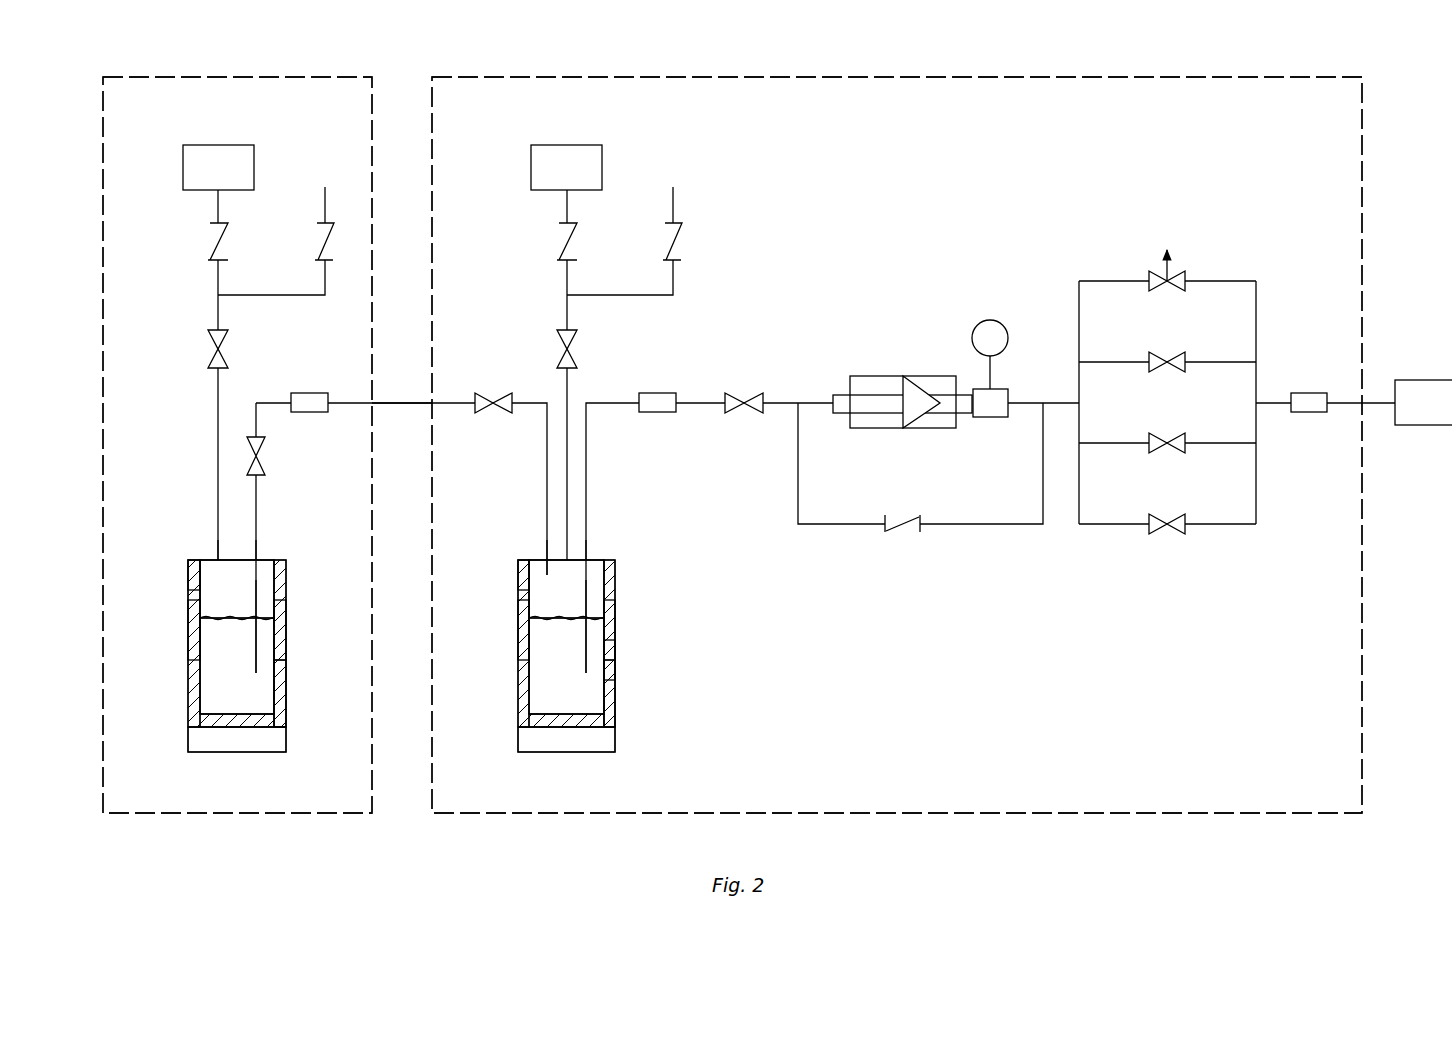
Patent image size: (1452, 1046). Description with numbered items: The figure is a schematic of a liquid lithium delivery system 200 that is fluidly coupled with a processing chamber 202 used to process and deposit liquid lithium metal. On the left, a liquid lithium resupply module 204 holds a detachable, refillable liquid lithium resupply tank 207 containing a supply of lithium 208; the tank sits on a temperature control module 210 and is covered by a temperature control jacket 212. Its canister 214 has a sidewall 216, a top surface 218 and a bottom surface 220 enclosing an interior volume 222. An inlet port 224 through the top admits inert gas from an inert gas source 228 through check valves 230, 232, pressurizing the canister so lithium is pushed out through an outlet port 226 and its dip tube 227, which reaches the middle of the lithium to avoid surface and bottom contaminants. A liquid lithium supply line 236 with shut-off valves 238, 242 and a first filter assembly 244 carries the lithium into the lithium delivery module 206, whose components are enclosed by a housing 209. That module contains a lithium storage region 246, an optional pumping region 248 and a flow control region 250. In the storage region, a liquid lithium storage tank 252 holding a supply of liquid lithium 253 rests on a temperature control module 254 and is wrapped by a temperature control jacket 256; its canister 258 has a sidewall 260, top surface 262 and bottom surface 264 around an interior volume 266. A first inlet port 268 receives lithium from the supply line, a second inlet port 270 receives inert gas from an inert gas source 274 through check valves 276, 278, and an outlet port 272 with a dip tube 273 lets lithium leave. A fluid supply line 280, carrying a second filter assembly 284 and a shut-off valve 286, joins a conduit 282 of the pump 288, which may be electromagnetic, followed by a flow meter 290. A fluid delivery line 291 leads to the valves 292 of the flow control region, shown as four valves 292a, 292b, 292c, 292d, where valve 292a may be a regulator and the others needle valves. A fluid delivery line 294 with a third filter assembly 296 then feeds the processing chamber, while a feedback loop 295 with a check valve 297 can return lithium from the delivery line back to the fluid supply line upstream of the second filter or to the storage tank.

The liquid lithium delivery system 200 is at (196, 45).
The processing chamber 202 is at (1450, 414).
The liquid lithium resupply module 204 is at (200, 833).
The lithium delivery module 206 is at (515, 835).
The liquid lithium resupply tank 207 is at (193, 568).
The supply of lithium 208 is at (215, 690).
The housing 209 is at (1268, 77).
The temperature control module 210 is at (207, 768).
The temperature control jacket 212 is at (287, 686).
The canister 214 is at (195, 632).
The sidewall 216 is at (282, 632).
The top surface 218 is at (270, 562).
The bottom surface 220 is at (258, 727).
The interior volume 222 is at (215, 600).
The inlet port 224 is at (216, 557).
The outlet port 226 is at (261, 557).
The dip tube 227 is at (258, 604).
The inert gas source 228 is at (236, 178).
The check valve 230 is at (322, 240).
The check valve 232 is at (212, 244).
The liquid lithium supply line 236 is at (390, 403).
The shut-off valve 238 is at (262, 458).
The shut-off valve 242 is at (487, 393).
The first filter assembly 244 is at (305, 393).
The lithium storage region 246 is at (703, 181).
The pumping region 248 is at (940, 181).
The flow control region 250 is at (1172, 181).
The liquid lithium storage tank 252 is at (610, 632).
The supply of liquid lithium 253 is at (545, 690).
The temperature control module 254 is at (540, 752).
The temperature control jacket 256 is at (614, 658).
The canister 258 is at (616, 686).
The sidewall 260 is at (545, 634).
The top surface 262 is at (598, 562).
The bottom surface 264 is at (588, 727).
The interior volume 266 is at (545, 600).
The first inlet port 268 is at (549, 562).
The second inlet port 270 is at (545, 557).
The outlet port 272 is at (592, 557).
The dip tube 273 is at (590, 604).
The inert gas source 274 is at (585, 178).
The check valve 276 is at (670, 240).
The check valve 278 is at (561, 244).
The fluid supply line 280 is at (612, 405).
The conduit 282 is at (835, 393).
The second filter assembly 284 is at (656, 393).
The shut-off valve 286 is at (752, 393).
The pump 288 is at (918, 392).
The flow meter 290 is at (990, 320).
The fluid delivery line 291 is at (1056, 403).
The valves 292 is at (1210, 238).
The valve 292a is at (1157, 275).
The valve 292b is at (1157, 356).
The valve 292c is at (1157, 437).
The valve 292d is at (1157, 518).
The fluid delivery line 294 is at (1344, 405).
The feedback loop 295 is at (840, 525).
The third filter assembly 296 is at (1316, 393).
The check valve 297 is at (912, 519).